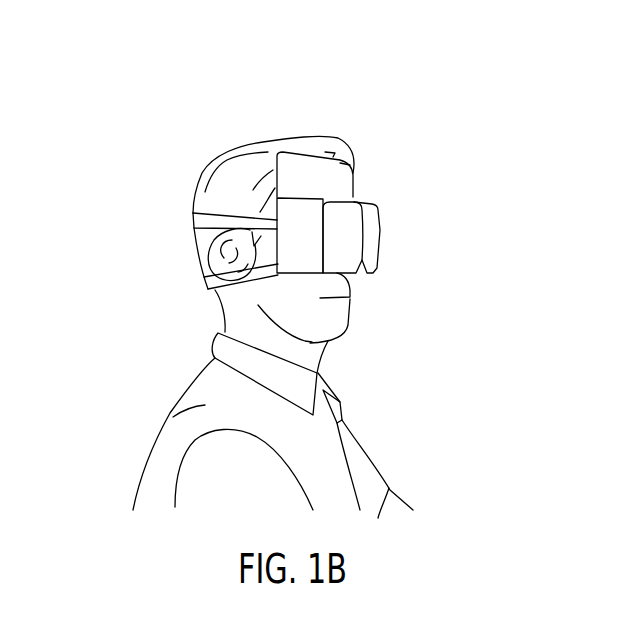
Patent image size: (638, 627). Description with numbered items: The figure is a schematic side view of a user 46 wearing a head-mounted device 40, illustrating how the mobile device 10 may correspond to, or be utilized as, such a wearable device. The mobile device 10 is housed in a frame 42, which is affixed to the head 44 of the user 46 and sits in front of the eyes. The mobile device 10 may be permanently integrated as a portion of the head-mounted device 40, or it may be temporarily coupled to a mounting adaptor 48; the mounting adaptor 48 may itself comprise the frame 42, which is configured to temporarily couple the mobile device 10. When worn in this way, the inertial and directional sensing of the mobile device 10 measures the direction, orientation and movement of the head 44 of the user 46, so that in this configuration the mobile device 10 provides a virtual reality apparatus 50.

The mobile device 10 is at (463, 80).
The head-mounted device 40 is at (324, 205).
The frame 42 is at (379, 248).
The head 44 is at (242, 168).
The user 46 is at (160, 331).
The mounting adaptor 48 is at (345, 208).
The virtual reality (VR) apparatus 50 is at (387, 223).